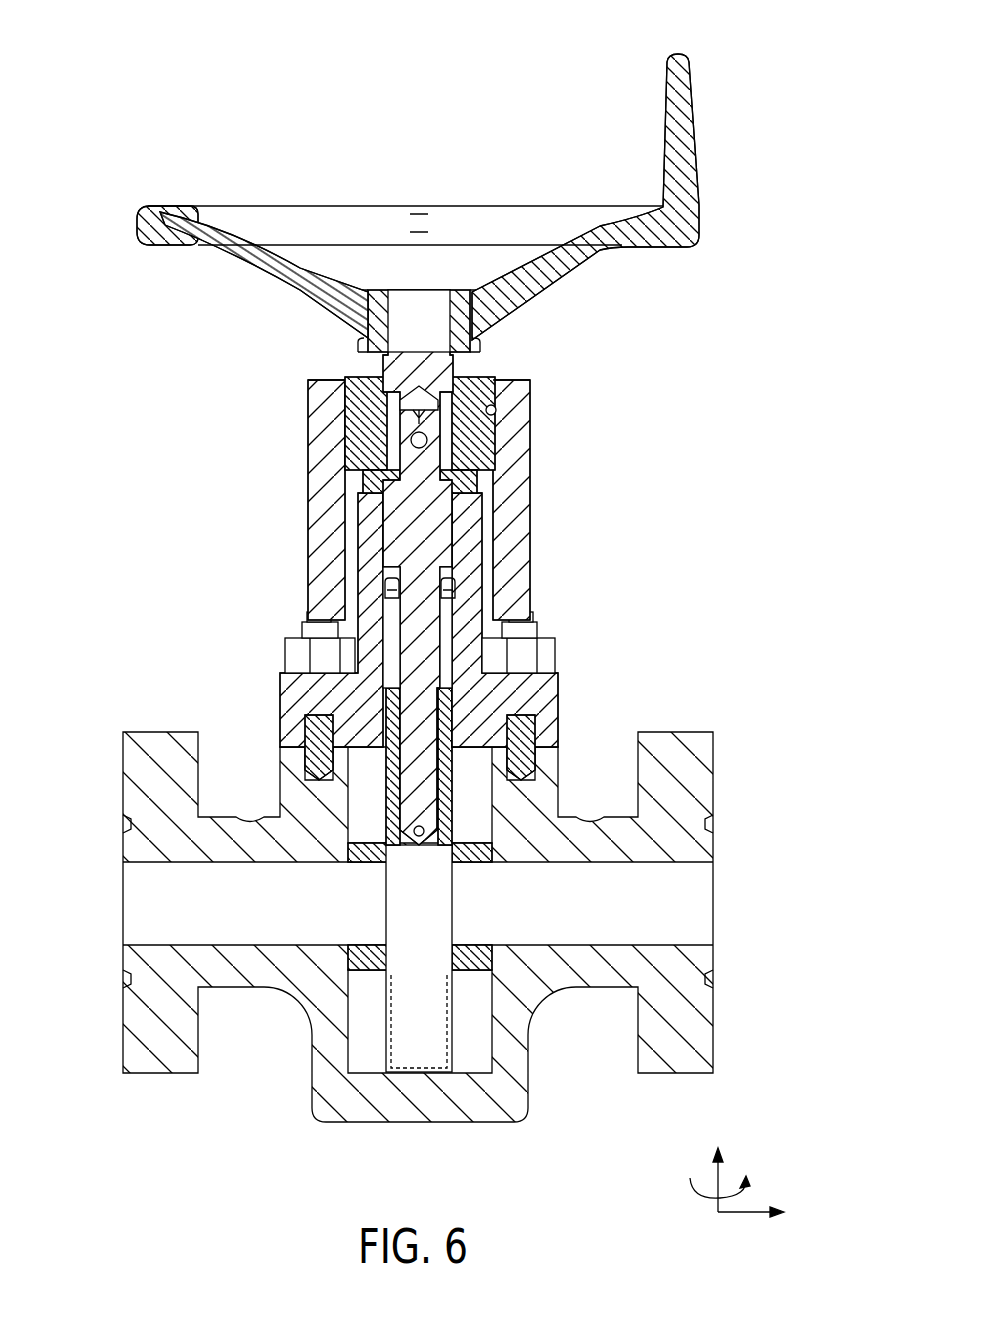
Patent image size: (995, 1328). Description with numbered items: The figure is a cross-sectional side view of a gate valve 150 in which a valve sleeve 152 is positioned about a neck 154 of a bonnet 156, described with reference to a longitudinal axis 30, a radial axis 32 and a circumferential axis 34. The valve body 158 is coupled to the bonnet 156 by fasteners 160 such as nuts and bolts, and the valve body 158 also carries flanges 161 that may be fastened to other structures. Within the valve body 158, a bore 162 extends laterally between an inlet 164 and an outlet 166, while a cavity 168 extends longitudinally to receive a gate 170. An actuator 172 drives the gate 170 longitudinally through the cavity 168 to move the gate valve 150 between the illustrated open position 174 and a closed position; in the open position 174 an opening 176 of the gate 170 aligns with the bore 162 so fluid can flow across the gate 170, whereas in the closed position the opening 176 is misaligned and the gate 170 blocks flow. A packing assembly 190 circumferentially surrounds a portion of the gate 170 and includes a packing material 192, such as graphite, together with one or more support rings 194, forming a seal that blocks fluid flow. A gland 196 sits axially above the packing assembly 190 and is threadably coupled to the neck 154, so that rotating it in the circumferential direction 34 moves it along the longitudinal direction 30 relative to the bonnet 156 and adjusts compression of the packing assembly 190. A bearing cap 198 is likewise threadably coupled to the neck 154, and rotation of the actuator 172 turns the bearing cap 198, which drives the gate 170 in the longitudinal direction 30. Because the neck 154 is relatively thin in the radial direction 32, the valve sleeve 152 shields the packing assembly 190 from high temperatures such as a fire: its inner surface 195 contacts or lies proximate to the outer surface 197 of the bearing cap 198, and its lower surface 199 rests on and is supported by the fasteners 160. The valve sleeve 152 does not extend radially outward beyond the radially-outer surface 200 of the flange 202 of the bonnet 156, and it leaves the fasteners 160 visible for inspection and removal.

The longitudinal axis 30 is at (715, 1177).
The radial axis 32 is at (745, 1215).
The circumferential axis 34 is at (703, 1197).
The gate valve 150 is at (447, 588).
The valve sleeve 152 is at (325, 407).
The neck 154 is at (463, 650).
The bonnet 156 is at (548, 688).
The valve body 158 is at (552, 792).
The fasteners 160 is at (300, 655).
The flanges 161 is at (148, 740).
The bore 162 is at (672, 893).
The inlet 164 is at (122, 905).
The outlet 166 is at (713, 895).
The cavity 168 is at (365, 790).
The gate 170 is at (425, 570).
The actuator 172 is at (567, 206).
The open position 174 is at (478, 449).
The opening 176 is at (452, 905).
The packing assembly 190 is at (462, 602).
The packing material 192 is at (365, 627).
The support rings 194 is at (385, 596).
The inner surface 195 is at (486, 404).
The gland 196 is at (470, 480).
The outer surface 197 is at (492, 412).
The bearing cap 198 is at (468, 380).
The lower surface 199 is at (500, 620).
The radially-outer surface 200 is at (556, 720).
The flange 202 is at (552, 712).